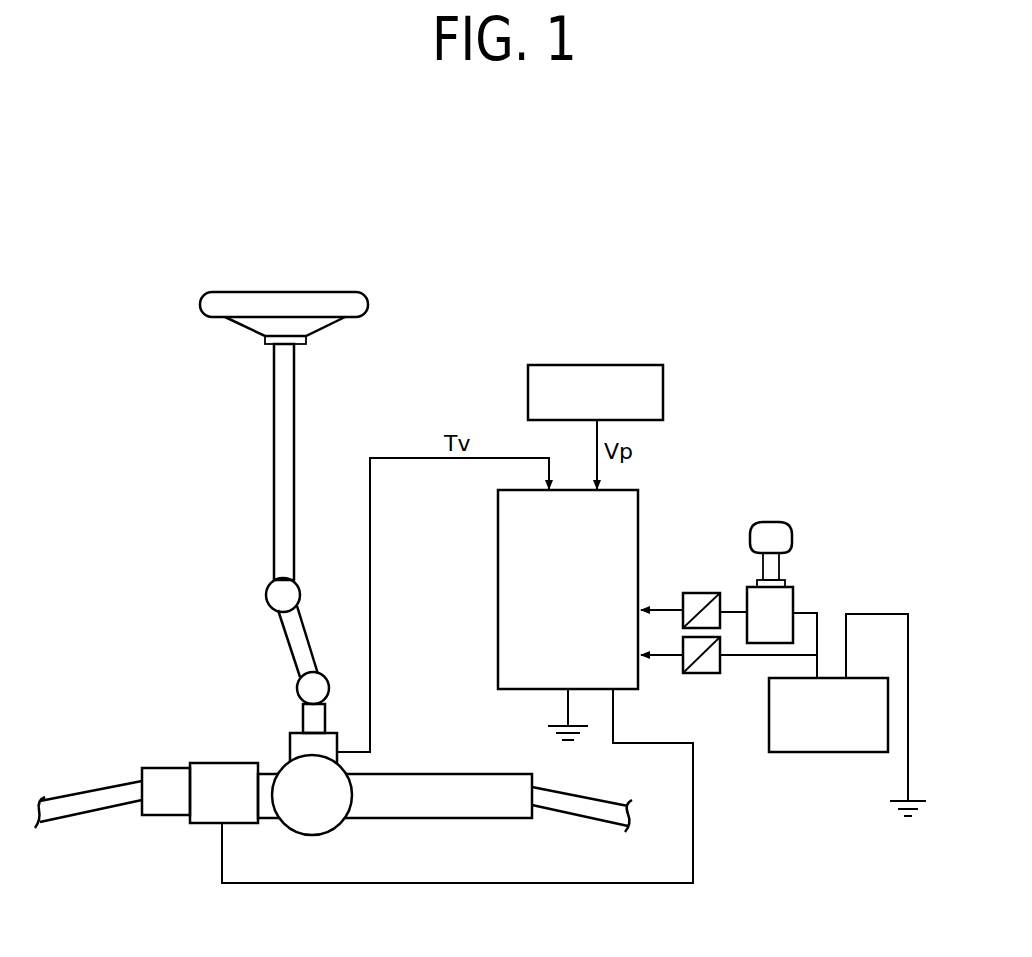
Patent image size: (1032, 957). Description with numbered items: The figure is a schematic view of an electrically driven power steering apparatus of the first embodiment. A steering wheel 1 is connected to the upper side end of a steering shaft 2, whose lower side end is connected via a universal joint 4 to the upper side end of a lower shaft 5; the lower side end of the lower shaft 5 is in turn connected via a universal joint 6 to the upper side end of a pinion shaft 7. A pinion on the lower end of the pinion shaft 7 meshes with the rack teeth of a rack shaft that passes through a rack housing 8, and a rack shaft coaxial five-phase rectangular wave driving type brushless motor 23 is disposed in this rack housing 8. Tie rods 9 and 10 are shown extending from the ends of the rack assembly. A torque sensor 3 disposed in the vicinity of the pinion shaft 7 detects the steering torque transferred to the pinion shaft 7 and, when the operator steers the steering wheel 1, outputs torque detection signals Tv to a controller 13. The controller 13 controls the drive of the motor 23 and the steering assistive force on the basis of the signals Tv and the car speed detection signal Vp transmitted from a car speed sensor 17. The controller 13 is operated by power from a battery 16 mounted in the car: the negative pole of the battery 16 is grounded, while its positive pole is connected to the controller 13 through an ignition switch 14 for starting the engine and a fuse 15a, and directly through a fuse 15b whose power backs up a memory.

The steering wheel 1 is at (368, 302).
The steering shaft 2 is at (280, 410).
The torque sensor 3 is at (330, 732).
The universal joint 4 is at (267, 597).
The lower shaft 5 is at (290, 642).
The universal joint 6 is at (297, 690).
The pinion shaft 7 is at (305, 727).
The rack housing 8 is at (412, 774).
The tie rod 9 is at (566, 812).
The tie rod 10 is at (88, 792).
The controller 13 is at (640, 500).
The ignition switch 14 is at (775, 521).
The fuse 15a is at (701, 593).
The fuse 15b is at (700, 675).
The battery 16 is at (826, 754).
The car speed sensor 17 is at (636, 365).
The brushless motor 23 is at (201, 762).